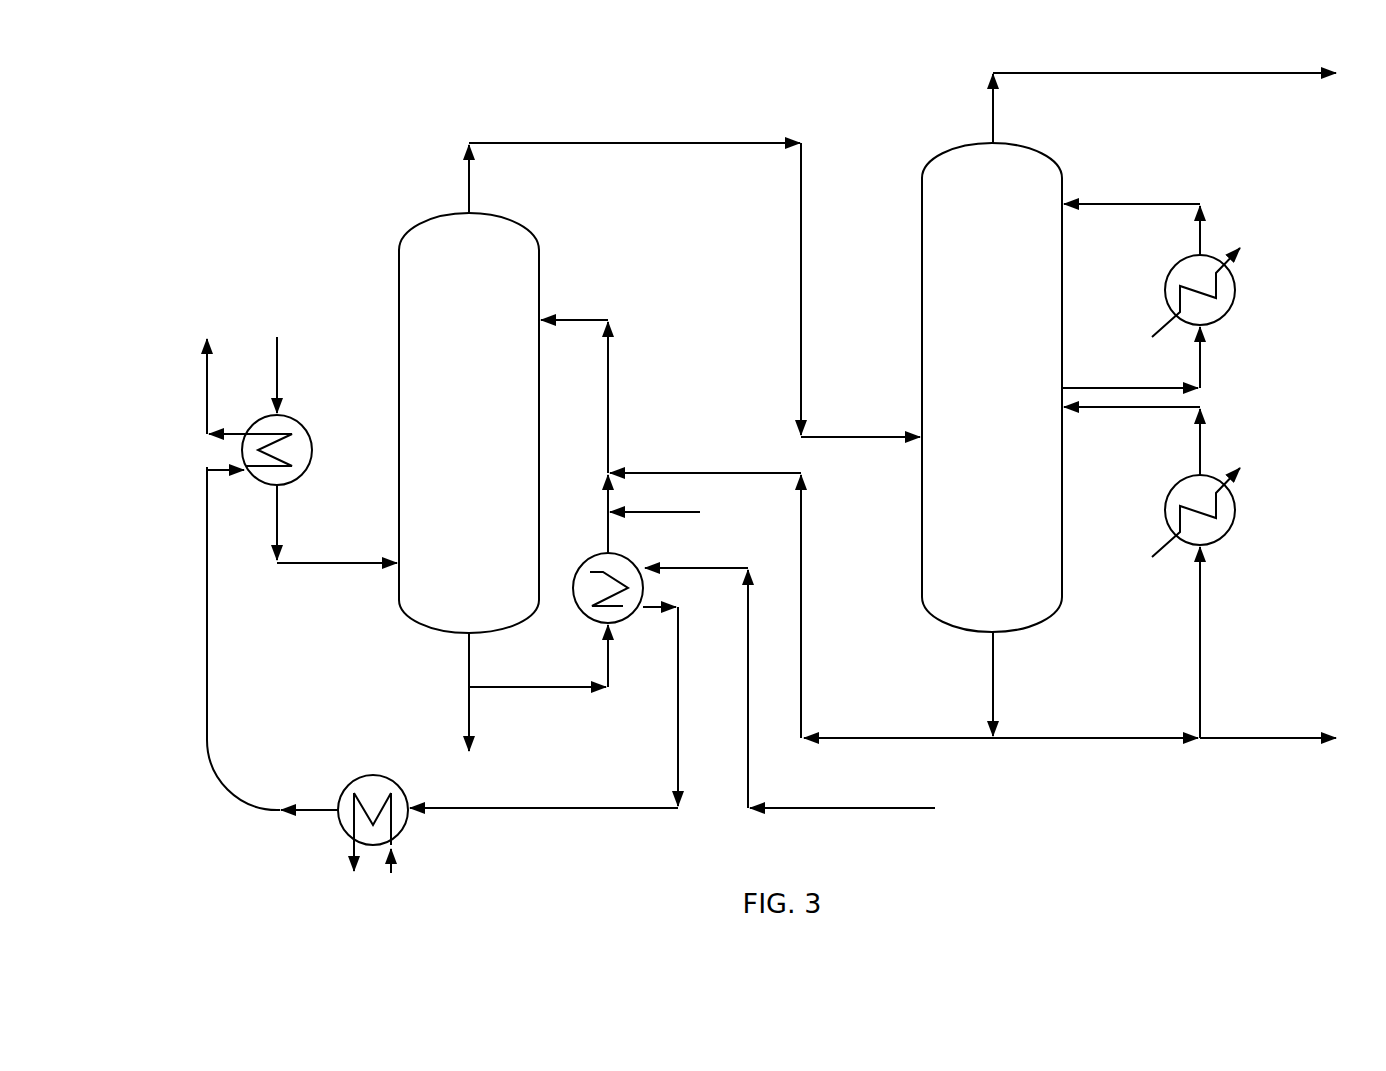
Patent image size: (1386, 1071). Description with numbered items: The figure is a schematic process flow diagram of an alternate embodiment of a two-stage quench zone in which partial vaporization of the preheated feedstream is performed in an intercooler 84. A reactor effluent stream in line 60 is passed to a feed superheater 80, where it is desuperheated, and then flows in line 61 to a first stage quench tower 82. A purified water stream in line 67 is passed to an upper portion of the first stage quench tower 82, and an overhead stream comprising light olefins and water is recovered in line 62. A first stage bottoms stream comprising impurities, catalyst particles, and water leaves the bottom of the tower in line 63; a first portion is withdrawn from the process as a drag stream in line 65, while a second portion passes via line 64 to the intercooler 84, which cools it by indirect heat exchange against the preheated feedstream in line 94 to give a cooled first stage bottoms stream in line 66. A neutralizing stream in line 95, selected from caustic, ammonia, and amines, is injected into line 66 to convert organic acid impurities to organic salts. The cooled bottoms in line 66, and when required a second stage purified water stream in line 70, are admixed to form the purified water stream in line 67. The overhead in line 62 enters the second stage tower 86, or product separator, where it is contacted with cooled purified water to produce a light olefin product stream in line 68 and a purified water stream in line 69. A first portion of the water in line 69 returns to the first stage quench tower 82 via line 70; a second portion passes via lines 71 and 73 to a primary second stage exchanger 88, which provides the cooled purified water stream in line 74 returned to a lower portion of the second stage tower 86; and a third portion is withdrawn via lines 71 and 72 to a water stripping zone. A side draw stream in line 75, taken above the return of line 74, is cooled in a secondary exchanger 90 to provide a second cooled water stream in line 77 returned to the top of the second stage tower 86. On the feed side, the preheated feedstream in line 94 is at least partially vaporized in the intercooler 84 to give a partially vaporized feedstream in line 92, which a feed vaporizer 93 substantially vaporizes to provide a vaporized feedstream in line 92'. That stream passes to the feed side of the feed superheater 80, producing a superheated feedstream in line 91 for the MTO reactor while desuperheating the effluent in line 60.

The reactor effluent stream line 60 is at (278, 366).
The desuperheated reactor effluent line 61 is at (376, 561).
The overhead stream line 62 is at (832, 437).
The first stage bottoms stream line 63 is at (466, 649).
The second portion of first stage bottoms stream line 64 is at (500, 687).
The drag stream line 65 is at (472, 741).
The cooled first stage bottoms stream line 66 is at (606, 529).
The purified water stream line 67 is at (610, 372).
The light olefin product stream line 68 is at (1166, 74).
The purified water stream line 69 is at (995, 679).
The second stage purified water stream line 70 is at (727, 474).
The purified water stream line 71 is at (1072, 737).
The third portion purified water line 72 is at (1255, 737).
The second portion purified water line 73 is at (1204, 645).
The cooled purified water stream line 74 is at (1204, 436).
The side draw stream line 75 is at (1204, 385).
The second cooled water stream line 77 is at (1172, 206).
The feed superheater 80 is at (305, 426).
The first stage quench tower 82 is at (462, 420).
The intercooler 84 is at (625, 618).
The second stage tower 86 is at (977, 367).
The primary second stage exchanger 88 is at (1238, 516).
The secondary exchanger 90 is at (1170, 262).
The superheated feedstream line 91 is at (208, 372).
The partially vaporized feedstream line 92 is at (544, 707).
The vaporized feedstream line 92' is at (272, 638).
The feed vaporizer 93 is at (385, 781).
The preheated feedstream line 94 is at (724, 568).
The neutralizing stream line 95 is at (655, 513).